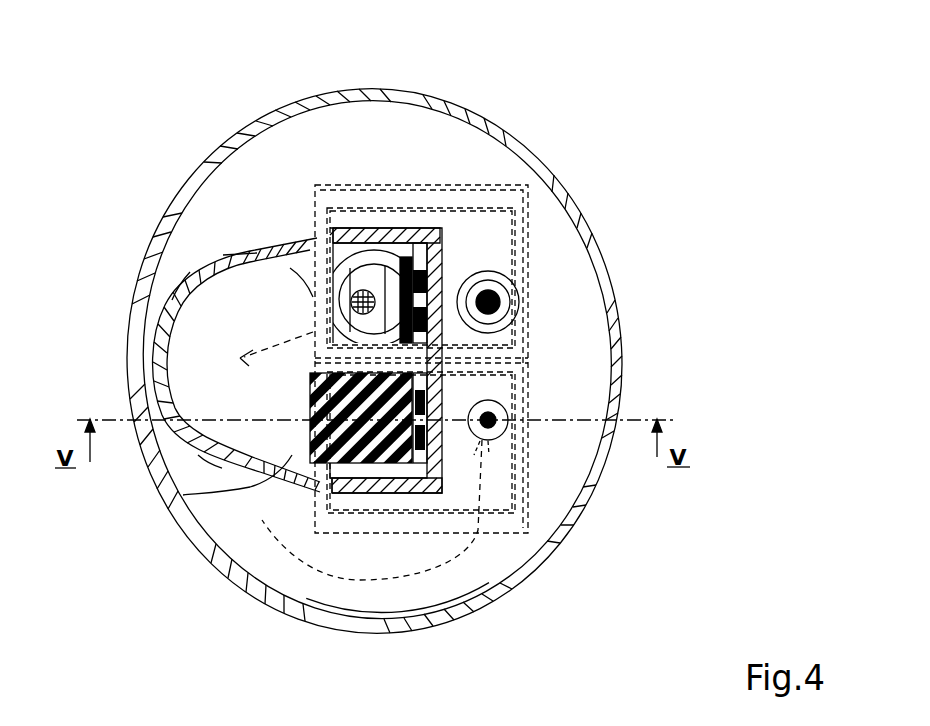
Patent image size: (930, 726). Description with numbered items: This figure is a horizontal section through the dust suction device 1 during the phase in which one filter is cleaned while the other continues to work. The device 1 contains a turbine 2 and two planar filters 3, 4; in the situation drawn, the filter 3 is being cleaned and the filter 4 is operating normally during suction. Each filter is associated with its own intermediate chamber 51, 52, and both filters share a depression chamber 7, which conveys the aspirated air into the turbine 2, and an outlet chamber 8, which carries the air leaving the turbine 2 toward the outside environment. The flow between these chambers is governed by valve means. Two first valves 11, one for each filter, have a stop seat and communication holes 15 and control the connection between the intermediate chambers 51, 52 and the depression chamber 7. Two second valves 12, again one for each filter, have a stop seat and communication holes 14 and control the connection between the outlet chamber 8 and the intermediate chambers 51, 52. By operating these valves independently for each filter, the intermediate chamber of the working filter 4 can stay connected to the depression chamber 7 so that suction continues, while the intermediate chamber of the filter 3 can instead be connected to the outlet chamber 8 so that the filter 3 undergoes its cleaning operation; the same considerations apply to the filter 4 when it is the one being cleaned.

The dust suction device 1 is at (163, 133).
The turbine 2 is at (122, 315).
The planar filter 3 is at (472, 494).
The planar filter 4 is at (474, 253).
The depression chamber 7 is at (292, 452).
The outlet chamber 8 is at (227, 528).
The first valve 11 is at (418, 232).
The second valve 12 is at (512, 270).
The communication holes 14 is at (495, 437).
The communication holes 15 is at (362, 232).
The intermediate chamber 51 is at (418, 485).
The intermediate chamber 52 is at (322, 228).